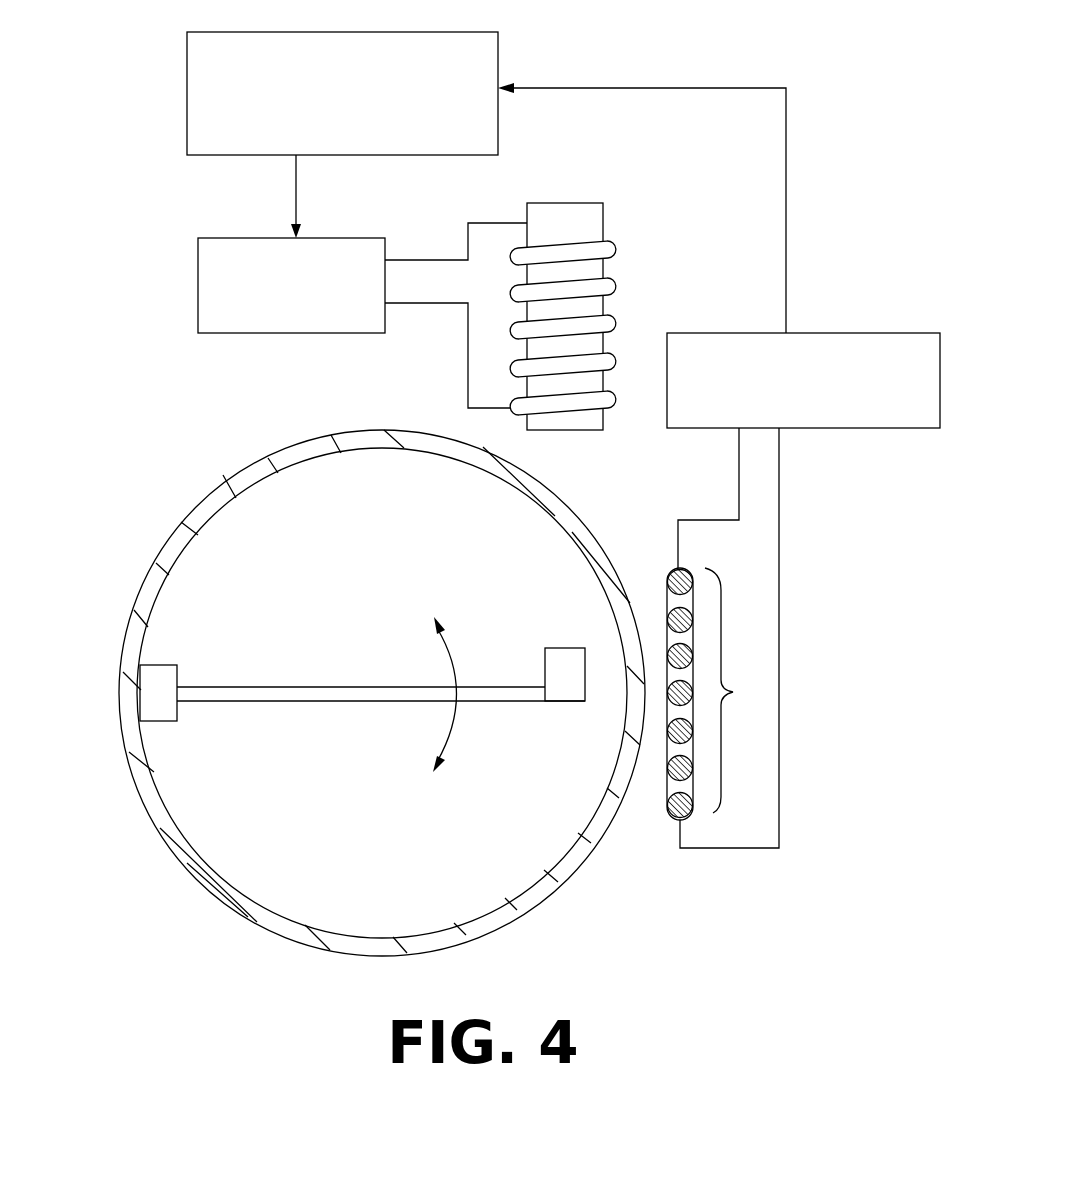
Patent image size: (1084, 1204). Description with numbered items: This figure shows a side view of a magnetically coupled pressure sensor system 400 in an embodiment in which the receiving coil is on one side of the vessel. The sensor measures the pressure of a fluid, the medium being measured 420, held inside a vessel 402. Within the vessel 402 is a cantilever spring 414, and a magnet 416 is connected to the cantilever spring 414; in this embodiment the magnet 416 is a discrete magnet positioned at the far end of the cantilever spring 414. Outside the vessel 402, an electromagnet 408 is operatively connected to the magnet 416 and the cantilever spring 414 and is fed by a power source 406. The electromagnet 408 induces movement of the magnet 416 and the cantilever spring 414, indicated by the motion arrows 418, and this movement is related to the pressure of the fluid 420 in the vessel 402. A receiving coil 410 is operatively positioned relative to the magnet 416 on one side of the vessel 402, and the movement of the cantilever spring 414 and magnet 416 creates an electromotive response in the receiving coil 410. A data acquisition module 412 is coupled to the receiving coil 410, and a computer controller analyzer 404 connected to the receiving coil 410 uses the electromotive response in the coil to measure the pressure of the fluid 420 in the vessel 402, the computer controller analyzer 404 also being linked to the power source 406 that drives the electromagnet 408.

The magnetically coupled pressure sensor system 400 is at (640, 47).
The vessel 402 is at (235, 476).
The computer controller analyzer 404 is at (187, 93).
The power source 406 is at (198, 300).
The electromagnet 408 is at (555, 203).
The receiving coil 410 is at (773, 694).
The data acquisition module 412 is at (840, 333).
The cantilever spring 414 is at (345, 687).
The magnet 416 is at (562, 648).
The motion arrows 418 is at (455, 720).
The medium being measured 420 is at (334, 807).